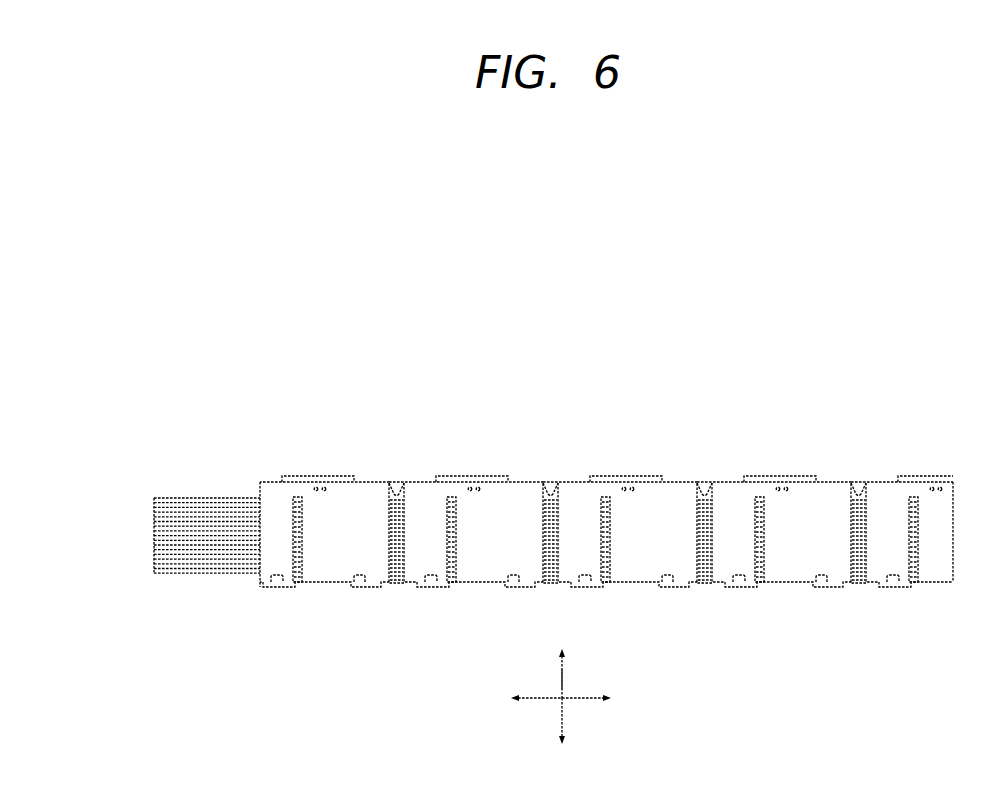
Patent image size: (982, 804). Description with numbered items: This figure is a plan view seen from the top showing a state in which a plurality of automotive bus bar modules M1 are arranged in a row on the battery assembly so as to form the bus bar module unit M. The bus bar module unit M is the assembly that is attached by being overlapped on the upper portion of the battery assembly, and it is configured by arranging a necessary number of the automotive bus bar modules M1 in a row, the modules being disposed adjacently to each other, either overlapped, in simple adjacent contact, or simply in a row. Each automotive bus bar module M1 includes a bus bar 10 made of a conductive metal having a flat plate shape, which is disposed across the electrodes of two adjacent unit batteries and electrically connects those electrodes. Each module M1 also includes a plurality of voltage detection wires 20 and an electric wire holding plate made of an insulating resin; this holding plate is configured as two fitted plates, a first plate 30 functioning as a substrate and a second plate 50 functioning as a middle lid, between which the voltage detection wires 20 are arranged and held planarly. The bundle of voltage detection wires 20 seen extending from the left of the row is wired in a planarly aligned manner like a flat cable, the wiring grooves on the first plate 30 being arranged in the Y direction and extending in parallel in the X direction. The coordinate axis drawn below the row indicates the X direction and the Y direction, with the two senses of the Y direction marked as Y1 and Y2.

The bus bar 10 is at (358, 503).
The first plate 30 is at (334, 512).
The second plate 50 is at (334, 512).
The voltage detection wires 20 is at (229, 565).
The bus bar module unit M is at (616, 497).
The automotive bus bar module M1 is at (684, 487).
The X direction X is at (568, 700).
The Y direction Y is at (563, 675).
The Y1 direction Y1 is at (561, 733).
The Y2 direction Y2 is at (561, 665).